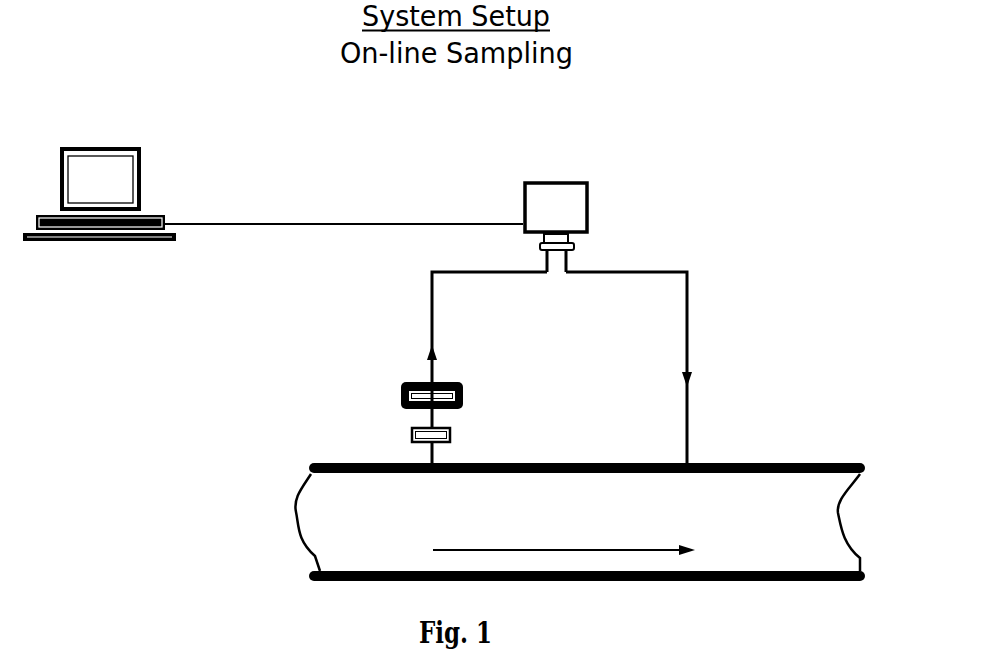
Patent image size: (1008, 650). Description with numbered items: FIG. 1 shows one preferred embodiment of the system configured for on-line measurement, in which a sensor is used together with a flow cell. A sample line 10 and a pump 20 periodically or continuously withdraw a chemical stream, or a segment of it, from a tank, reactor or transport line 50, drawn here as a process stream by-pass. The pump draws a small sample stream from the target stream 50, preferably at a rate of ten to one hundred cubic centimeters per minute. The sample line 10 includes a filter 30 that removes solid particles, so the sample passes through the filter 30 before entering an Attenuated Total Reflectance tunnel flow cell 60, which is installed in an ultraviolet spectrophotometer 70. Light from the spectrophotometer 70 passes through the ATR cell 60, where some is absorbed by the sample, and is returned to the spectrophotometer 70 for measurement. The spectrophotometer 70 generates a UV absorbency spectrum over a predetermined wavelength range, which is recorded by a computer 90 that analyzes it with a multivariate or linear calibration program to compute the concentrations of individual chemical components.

The sample line 10 is at (592, 368).
The pump 20 is at (355, 390).
The filter 30 is at (507, 431).
The tank, reactor or transport line 50 is at (577, 522).
The Attenuated Total Reflectance (ATR) Tunnel flow cell 60 is at (705, 250).
The Ultraviolet Spectrophotometer 70 is at (612, 175).
The computer 90 is at (273, 221).